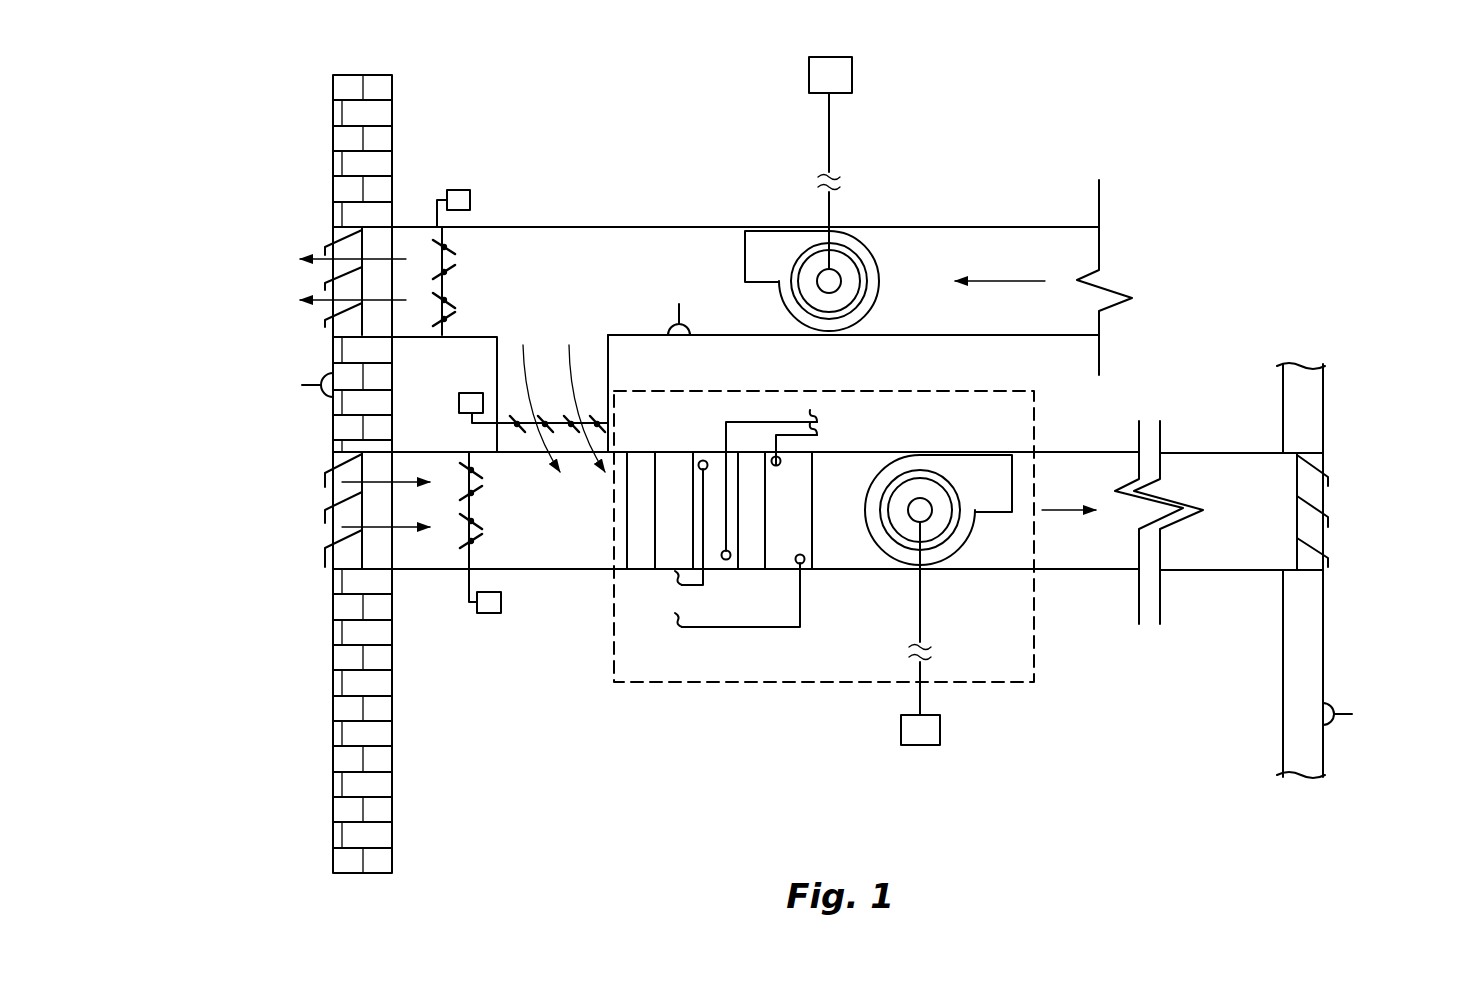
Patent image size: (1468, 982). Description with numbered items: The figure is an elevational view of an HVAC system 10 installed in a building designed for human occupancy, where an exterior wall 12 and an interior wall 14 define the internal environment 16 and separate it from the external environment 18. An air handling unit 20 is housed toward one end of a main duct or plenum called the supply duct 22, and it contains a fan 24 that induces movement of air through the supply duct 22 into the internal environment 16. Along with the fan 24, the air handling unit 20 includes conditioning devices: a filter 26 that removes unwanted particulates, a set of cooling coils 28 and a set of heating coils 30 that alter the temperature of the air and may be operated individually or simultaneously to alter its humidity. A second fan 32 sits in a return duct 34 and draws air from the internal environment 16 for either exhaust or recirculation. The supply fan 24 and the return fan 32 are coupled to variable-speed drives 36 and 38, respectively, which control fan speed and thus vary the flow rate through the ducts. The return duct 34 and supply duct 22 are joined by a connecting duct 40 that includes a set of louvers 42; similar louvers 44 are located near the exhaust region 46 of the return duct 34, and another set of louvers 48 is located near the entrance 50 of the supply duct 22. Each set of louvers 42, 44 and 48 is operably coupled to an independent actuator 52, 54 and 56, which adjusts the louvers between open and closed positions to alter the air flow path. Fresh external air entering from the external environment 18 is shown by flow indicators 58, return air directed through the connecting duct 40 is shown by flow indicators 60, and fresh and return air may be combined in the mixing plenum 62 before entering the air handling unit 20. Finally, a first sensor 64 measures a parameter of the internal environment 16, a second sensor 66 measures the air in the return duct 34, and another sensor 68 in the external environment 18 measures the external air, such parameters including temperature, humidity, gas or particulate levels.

The HVAC system 10 is at (1045, 115).
The exterior wall 12 is at (392, 105).
The interior wall 14 is at (1323, 418).
The internal environment 16 is at (1431, 585).
The external environment 18 is at (138, 381).
The air handling unit 20 is at (737, 682).
The supply duct 22 is at (1090, 572).
The fan 24 is at (884, 468).
The filter 26 is at (620, 565).
The cooling coils 28 is at (693, 477).
The heating coils 30 is at (813, 470).
The second fan 32 is at (858, 233).
The return duct 34 is at (982, 225).
The variable-speed drive 36 is at (940, 733).
The variable-speed drive 38 is at (852, 75).
The connecting duct 40 is at (608, 357).
The louvers 42 is at (520, 432).
The louvers 44 is at (447, 250).
The exhaust region 46 is at (392, 227).
The louvers 48 is at (464, 555).
The entrance 50 is at (393, 565).
The actuator 52 is at (471, 393).
The actuator 54 is at (470, 195).
The actuator 56 is at (490, 613).
The flow indicators 58 is at (330, 536).
The flow indicators 60 is at (575, 395).
The mixing plenum 62 is at (542, 546).
The first sensor 64 is at (1330, 722).
The second sensor 66 is at (690, 325).
The sensor 68 is at (320, 393).